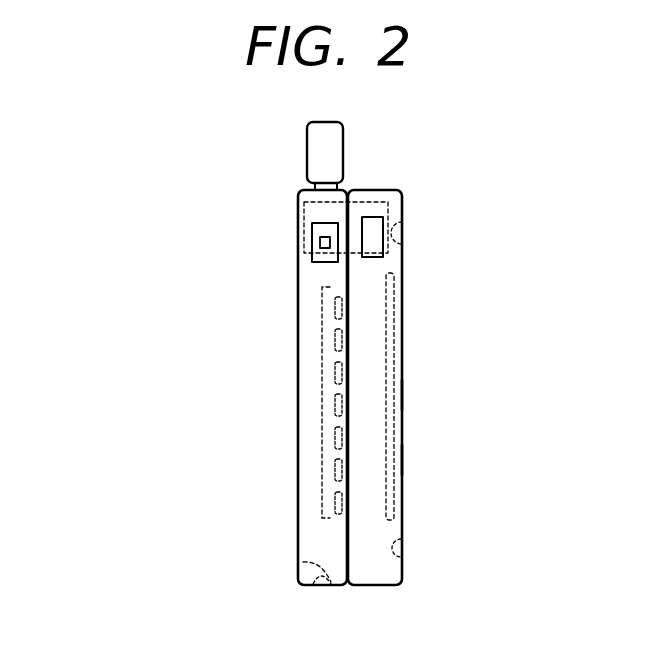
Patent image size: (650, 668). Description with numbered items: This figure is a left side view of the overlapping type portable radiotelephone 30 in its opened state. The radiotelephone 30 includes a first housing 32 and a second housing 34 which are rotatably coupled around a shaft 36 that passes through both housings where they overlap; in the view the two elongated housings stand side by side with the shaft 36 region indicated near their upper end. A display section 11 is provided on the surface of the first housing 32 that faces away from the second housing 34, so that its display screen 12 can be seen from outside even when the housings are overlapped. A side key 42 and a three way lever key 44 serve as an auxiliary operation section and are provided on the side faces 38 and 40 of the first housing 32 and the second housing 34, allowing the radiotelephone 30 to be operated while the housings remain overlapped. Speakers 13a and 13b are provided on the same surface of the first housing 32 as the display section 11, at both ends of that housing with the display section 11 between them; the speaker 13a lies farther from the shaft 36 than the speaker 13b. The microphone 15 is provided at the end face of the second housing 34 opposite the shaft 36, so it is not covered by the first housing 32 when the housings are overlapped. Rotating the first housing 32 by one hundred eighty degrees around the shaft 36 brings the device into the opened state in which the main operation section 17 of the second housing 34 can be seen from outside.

The overlapping type portable radiotelephone 30 is at (136, 480).
The first housing 32 is at (398, 345).
The second housing 34 is at (298, 389).
The shaft 36 is at (371, 212).
The side face of the first housing 38 is at (372, 297).
The side face of the second housing 40 is at (316, 308).
The side key 42 is at (386, 228).
The three way lever key 44 is at (312, 235).
The main operation section 17 is at (330, 432).
The display screen 12 is at (398, 395).
The display section 11 is at (400, 458).
The speaker 13a is at (402, 548).
The speaker 13b is at (405, 233).
The microphone 15 is at (303, 562).